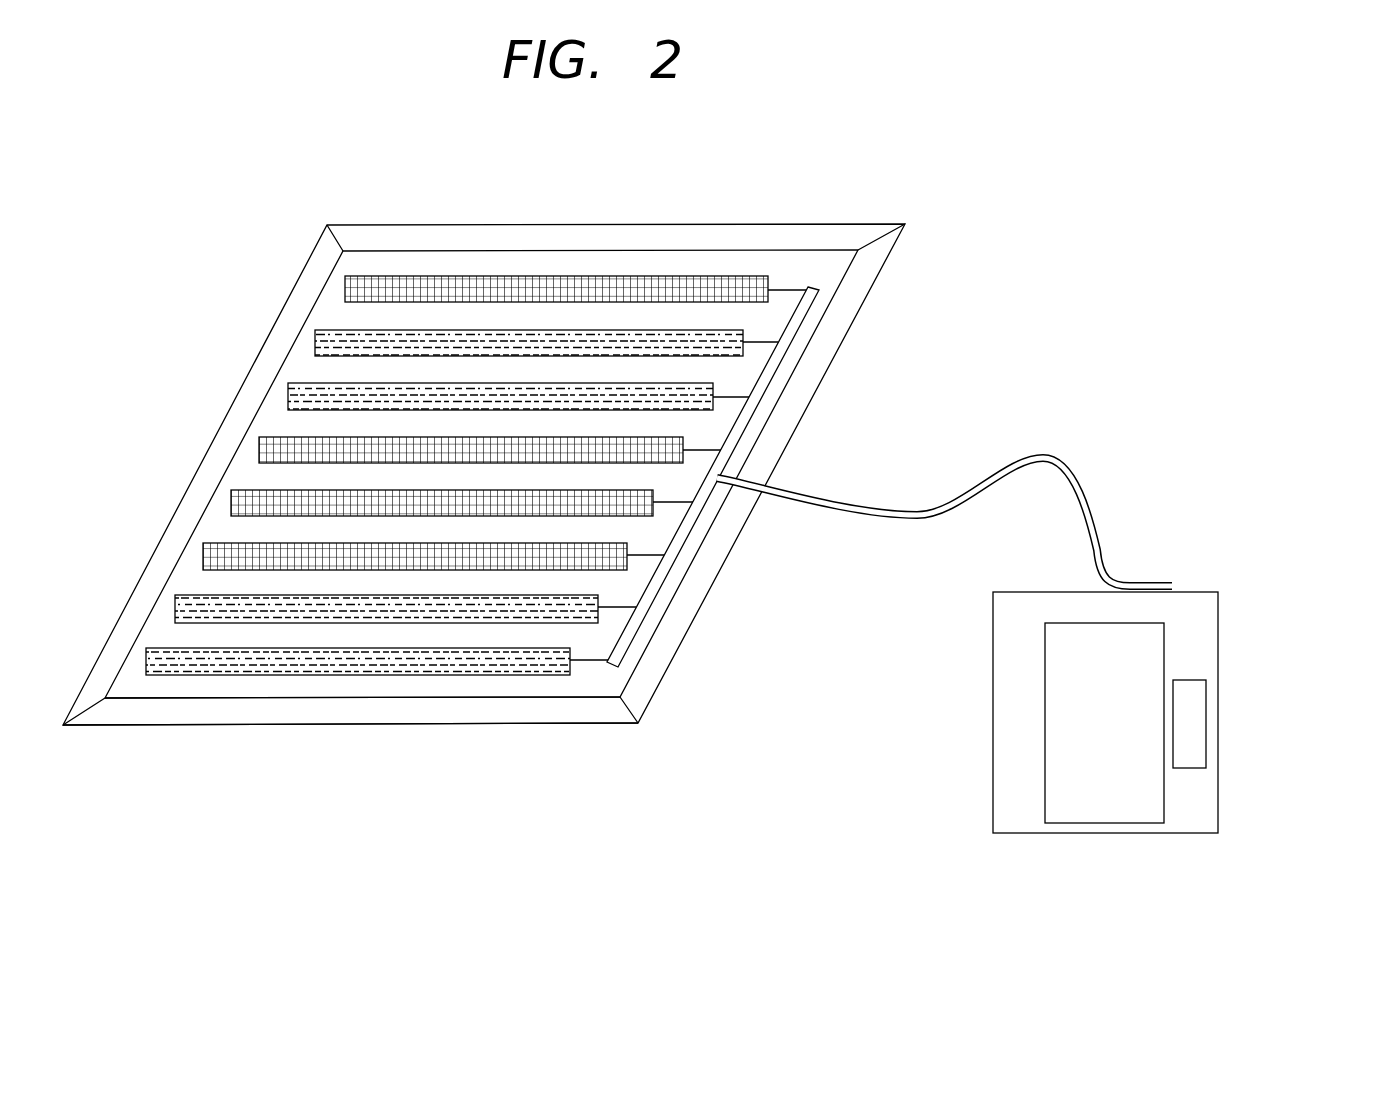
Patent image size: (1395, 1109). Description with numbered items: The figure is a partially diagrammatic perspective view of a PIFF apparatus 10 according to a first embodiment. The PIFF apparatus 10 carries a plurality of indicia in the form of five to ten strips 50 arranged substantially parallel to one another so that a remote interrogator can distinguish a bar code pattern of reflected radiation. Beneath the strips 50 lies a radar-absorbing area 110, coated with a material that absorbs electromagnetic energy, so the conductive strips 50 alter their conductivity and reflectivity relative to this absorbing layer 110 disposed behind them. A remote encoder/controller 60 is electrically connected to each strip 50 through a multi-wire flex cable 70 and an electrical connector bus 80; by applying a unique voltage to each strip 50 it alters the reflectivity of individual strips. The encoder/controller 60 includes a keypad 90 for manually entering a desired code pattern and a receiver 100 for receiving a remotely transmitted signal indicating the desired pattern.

The PIFF apparatus 10 is at (484, 465).
The strips 50 is at (268, 443).
The encoder/controller 60 is at (1194, 746).
The multi-wire flex cable 70 is at (1072, 431).
The electrical connector bus 80 is at (698, 516).
The keypad 90 is at (1140, 810).
The receiver 100 is at (1195, 728).
The radar-absorbing area 110 is at (478, 694).